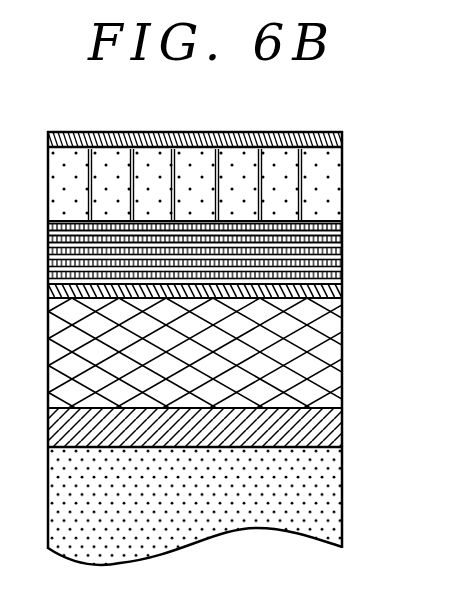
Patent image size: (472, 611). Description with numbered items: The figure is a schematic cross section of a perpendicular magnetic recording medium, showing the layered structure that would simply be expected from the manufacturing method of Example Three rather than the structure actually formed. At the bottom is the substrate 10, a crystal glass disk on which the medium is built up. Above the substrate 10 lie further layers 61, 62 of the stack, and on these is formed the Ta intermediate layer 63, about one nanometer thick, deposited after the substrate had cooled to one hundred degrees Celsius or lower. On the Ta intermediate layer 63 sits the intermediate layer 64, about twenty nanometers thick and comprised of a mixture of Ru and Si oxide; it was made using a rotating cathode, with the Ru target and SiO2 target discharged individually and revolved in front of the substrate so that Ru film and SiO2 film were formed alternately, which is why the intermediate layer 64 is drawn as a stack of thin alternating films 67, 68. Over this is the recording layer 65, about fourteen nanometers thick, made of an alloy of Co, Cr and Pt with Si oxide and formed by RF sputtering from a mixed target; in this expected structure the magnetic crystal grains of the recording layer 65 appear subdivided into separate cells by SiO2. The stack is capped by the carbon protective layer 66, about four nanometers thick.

The substrate 10 is at (330, 483).
The first underlayer 61 is at (343, 428).
The second underlayer 62 is at (332, 358).
The Ta intermediate layer 63 is at (343, 296).
The intermediate layer 64 is at (349, 223).
The recording layer 65 is at (349, 146).
The carbon protective layer 66 is at (345, 133).
The first film of laminated layer 67 is at (343, 250).
The second film of laminated layer 68 is at (343, 241).